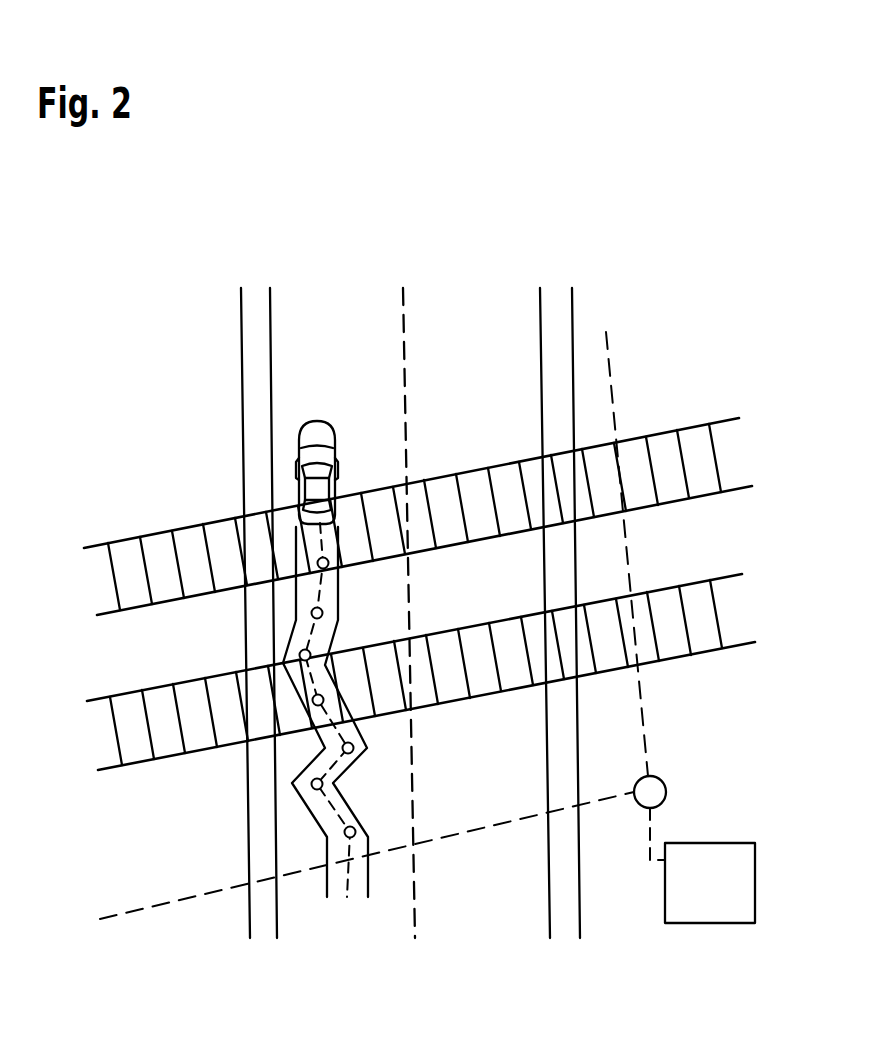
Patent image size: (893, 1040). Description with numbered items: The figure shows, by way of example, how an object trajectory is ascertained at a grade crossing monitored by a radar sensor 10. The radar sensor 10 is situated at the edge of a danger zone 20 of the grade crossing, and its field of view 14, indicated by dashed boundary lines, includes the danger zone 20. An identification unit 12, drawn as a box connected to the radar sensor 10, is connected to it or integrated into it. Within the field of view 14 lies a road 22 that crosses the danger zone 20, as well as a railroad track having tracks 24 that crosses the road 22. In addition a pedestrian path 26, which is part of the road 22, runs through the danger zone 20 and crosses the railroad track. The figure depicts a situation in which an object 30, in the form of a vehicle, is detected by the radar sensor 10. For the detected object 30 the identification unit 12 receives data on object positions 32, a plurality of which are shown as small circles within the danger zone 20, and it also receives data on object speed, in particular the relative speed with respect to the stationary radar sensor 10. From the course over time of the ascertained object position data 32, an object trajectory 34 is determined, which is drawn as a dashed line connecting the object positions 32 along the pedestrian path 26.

The radar sensor 10 is at (668, 795).
The identification unit 12 is at (712, 921).
The field of view 14 is at (626, 553).
The danger zone 20 is at (663, 372).
The road 22 is at (248, 932).
The tracks 24 is at (157, 533).
The pedestrian path 26 is at (265, 930).
The object 30 is at (318, 438).
The object positions 32 is at (324, 614).
The object trajectory 34 is at (296, 632).